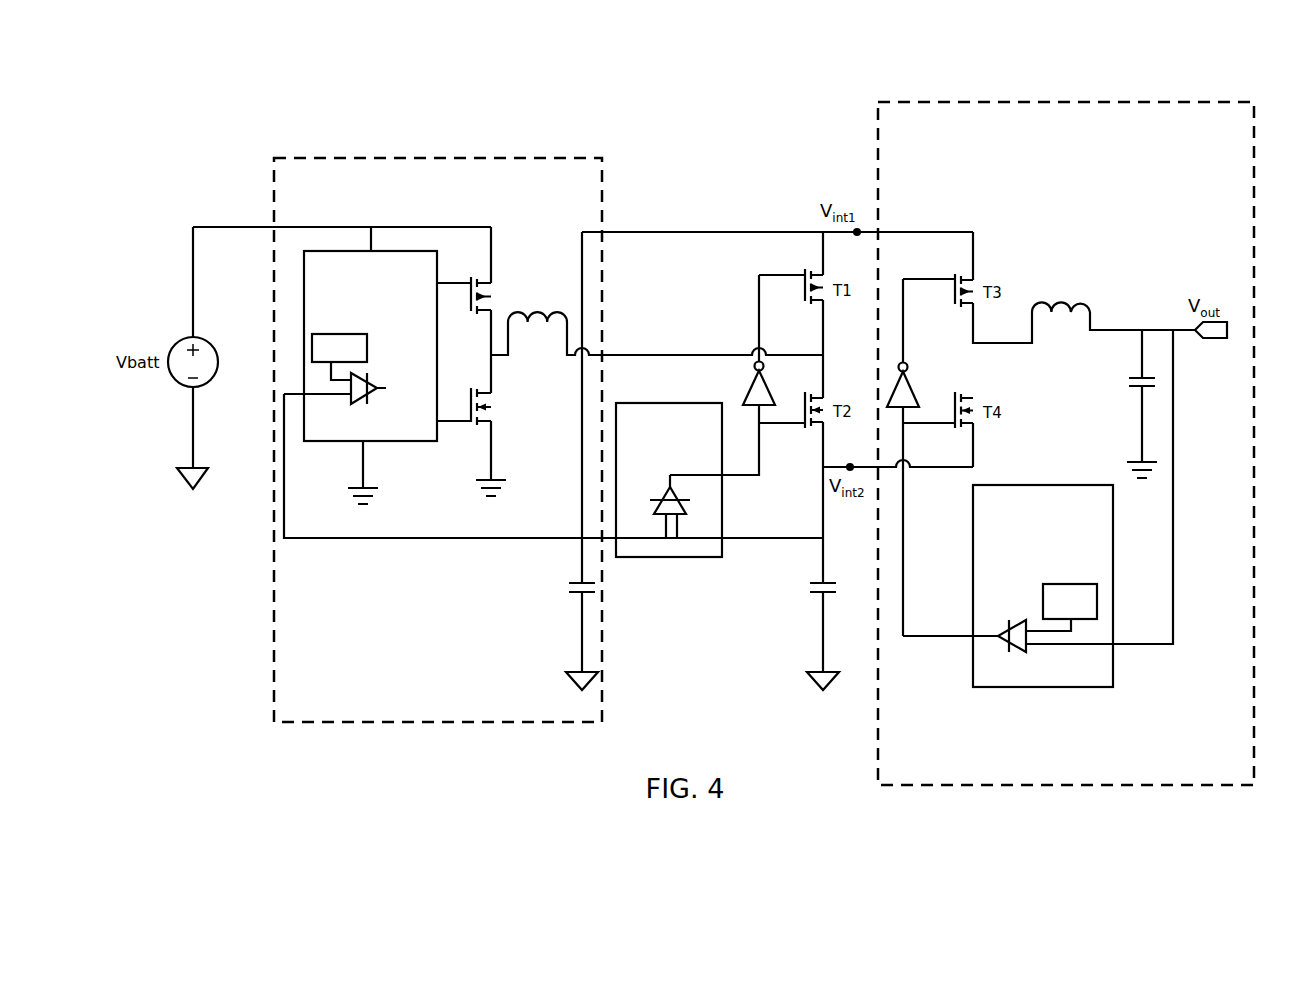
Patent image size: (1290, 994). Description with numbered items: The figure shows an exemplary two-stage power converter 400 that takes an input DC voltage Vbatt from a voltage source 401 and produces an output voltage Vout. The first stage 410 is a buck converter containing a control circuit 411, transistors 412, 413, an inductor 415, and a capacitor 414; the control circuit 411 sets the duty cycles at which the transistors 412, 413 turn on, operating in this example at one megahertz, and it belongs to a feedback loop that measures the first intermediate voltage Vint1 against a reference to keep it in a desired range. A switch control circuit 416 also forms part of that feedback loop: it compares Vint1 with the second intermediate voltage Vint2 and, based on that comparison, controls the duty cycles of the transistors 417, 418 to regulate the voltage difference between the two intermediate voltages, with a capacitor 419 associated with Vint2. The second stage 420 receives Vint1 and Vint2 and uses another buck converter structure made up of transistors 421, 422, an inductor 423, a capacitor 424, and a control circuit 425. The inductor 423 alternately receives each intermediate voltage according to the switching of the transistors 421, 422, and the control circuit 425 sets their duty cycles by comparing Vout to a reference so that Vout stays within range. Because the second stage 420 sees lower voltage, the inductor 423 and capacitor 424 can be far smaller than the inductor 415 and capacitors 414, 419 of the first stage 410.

The power converter 400 is at (226, 103).
The voltage source 401 is at (211, 342).
The first stage 410 is at (427, 157).
The control circuit 411 is at (438, 254).
The transistor 412 is at (497, 297).
The transistor 413 is at (497, 416).
The capacitor 414 is at (578, 582).
The inductor 415 is at (558, 325).
The switch control circuit 416 is at (660, 403).
The transistor 417 is at (818, 393).
The transistor 418 is at (818, 306).
The capacitor 419 is at (818, 582).
The second stage 420 is at (1080, 102).
The transistor 421 is at (966, 276).
The transistor 422 is at (967, 396).
The inductor 423 is at (1056, 302).
The capacitor 424 is at (1136, 376).
The control circuit 425 is at (1052, 485).